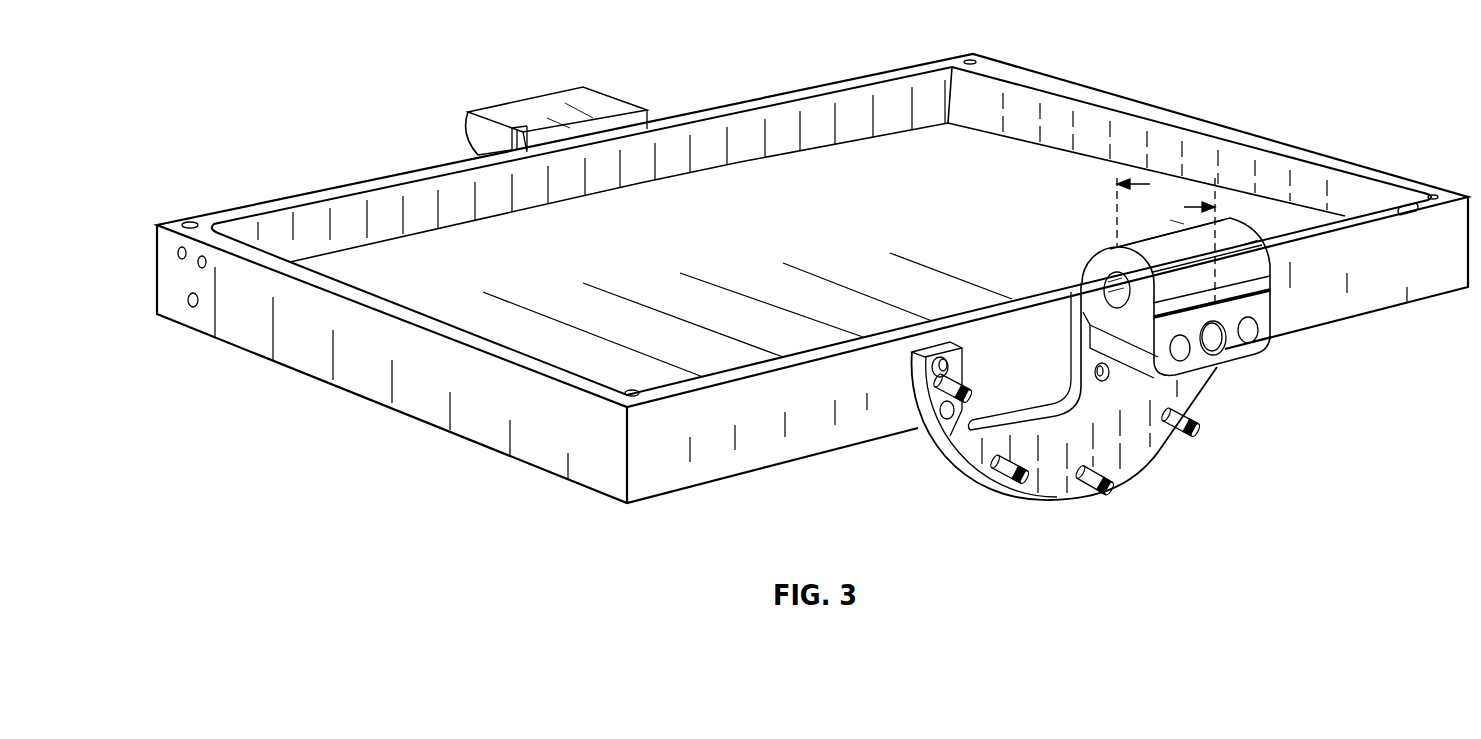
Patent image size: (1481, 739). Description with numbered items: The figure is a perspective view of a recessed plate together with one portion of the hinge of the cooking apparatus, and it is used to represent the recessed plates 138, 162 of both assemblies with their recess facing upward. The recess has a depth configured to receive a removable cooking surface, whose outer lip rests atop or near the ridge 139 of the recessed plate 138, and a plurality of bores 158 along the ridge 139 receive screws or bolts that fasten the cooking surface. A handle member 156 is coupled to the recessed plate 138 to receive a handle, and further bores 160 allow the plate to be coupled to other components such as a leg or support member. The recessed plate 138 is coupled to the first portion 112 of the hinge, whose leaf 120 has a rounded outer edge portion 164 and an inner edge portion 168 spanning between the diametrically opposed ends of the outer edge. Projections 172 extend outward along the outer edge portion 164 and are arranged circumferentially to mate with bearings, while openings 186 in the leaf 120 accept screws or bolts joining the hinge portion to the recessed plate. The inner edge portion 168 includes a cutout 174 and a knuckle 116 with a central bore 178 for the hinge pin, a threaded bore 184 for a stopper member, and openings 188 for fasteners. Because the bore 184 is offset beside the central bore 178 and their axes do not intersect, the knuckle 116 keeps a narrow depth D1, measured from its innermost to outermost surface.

The first portion of the hinge 112 is at (926, 466).
The knuckle 116 is at (1262, 262).
The leaf 120 is at (1104, 452).
The recessed plate 138 is at (812, 271).
The ridge 139 is at (1235, 138).
The handle member 156 is at (592, 102).
The bores 158 is at (188, 223).
The bores 160 is at (178, 257).
The recessed plate 162 is at (1032, 74).
The rounded outer edge portion 164 is at (1052, 497).
The inner edge portion 168 is at (928, 350).
The projections 172 is at (1199, 432).
The cutout 174 is at (1073, 386).
The central bore 178 is at (1083, 287).
The bore 184 is at (1217, 347).
The openings 186 is at (1110, 372).
The openings 188 is at (1257, 332).
The knuckle depth D1 is at (1166, 241).